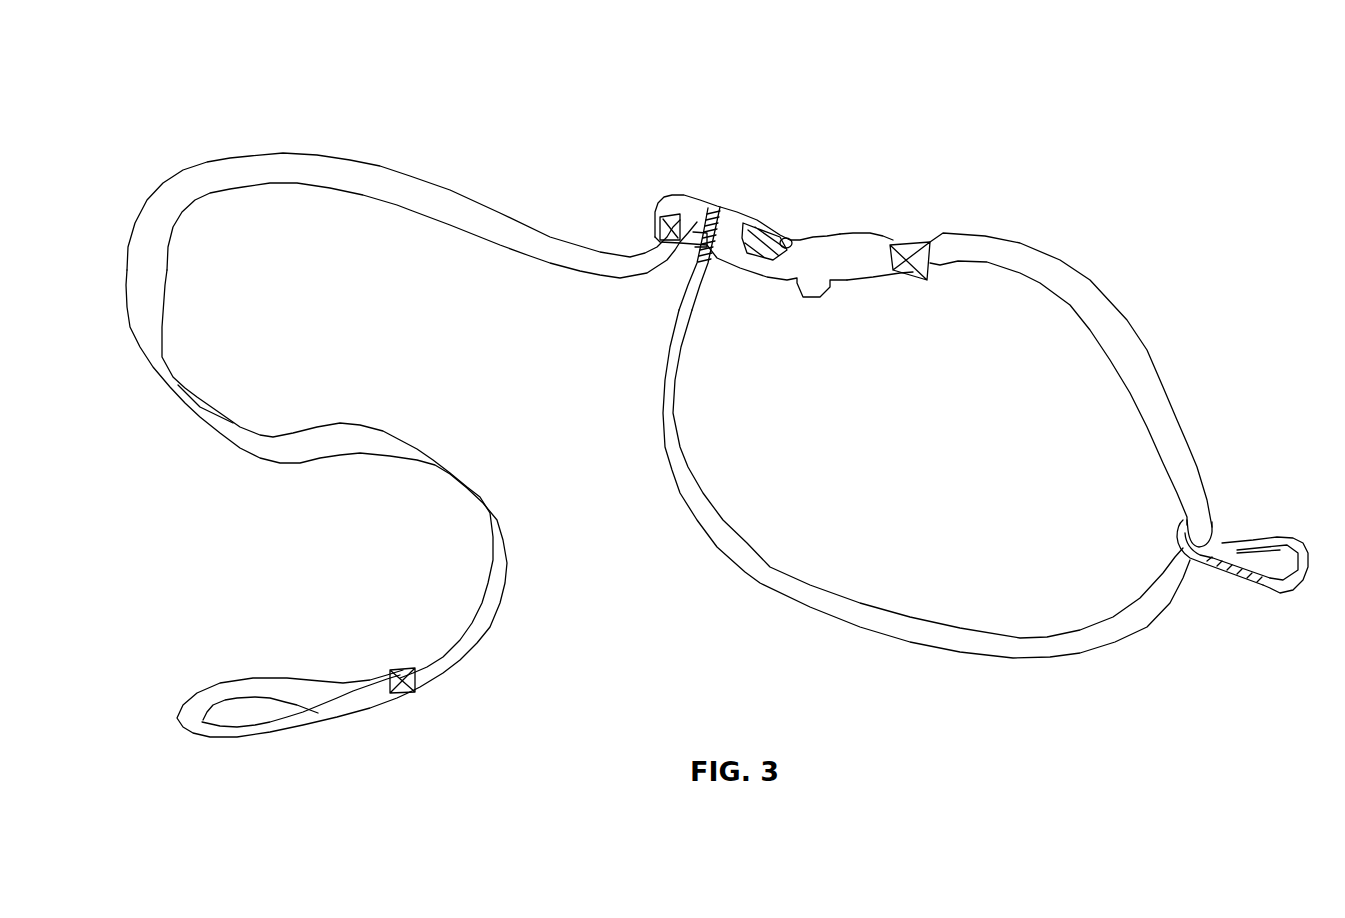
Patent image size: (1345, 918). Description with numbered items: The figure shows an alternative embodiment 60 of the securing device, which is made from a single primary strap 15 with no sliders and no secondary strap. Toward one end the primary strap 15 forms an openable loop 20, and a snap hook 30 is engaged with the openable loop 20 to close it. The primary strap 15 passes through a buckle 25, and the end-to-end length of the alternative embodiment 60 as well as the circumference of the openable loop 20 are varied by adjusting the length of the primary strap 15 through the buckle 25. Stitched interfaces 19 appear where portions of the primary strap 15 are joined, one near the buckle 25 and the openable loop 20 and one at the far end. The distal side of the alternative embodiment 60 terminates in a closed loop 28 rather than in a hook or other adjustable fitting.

The primary strap 15 is at (200, 165).
The alternative embodiment 60 is at (817, 139).
The buckle 25 is at (738, 210).
The interface 19 is at (910, 238).
The openable loop 20 is at (1158, 338).
The snap hook 30 is at (1277, 537).
The closed loop 28 is at (278, 728).